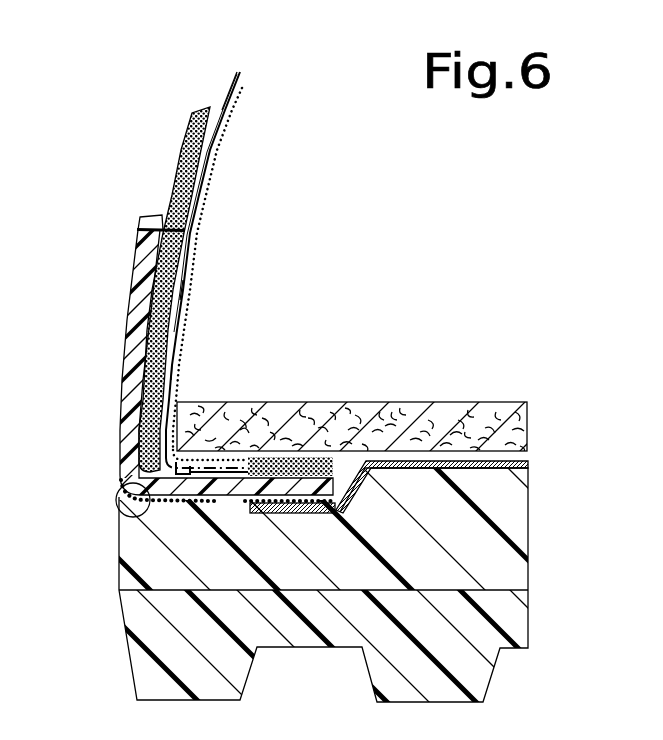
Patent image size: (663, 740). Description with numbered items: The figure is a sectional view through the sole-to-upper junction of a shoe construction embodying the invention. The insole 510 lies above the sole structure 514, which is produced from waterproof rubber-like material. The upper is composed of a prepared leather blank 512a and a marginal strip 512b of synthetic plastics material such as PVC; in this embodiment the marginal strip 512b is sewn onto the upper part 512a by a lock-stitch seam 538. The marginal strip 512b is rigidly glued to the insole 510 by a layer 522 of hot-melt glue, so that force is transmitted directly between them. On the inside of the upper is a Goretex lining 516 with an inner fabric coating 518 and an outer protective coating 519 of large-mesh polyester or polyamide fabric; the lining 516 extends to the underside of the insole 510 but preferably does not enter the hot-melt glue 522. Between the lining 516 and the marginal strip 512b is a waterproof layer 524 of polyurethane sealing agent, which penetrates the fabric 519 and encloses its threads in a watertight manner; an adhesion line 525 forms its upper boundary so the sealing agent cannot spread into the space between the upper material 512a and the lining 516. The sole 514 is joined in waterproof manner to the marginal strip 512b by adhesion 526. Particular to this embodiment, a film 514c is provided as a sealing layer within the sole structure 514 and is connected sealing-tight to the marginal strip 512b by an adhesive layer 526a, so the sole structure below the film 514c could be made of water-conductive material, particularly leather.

The insole 510 is at (492, 423).
The prepared blank 512a is at (186, 133).
The marginal strip 512b is at (120, 390).
The sole structure 514 is at (119, 589).
The film 514c is at (343, 462).
The Goretex lining 516 is at (240, 75).
The inner fabric coating 518 is at (233, 110).
The outer protective coating 519 is at (231, 85).
The layer of hot-melt glue 522 is at (283, 460).
The layer of polyurethane sealing agent 524 is at (172, 372).
The adhesion line 525 is at (182, 287).
The adhesion 526 is at (117, 508).
The adhesive layer 526a is at (310, 508).
The lock-stitch seam 538 is at (140, 218).